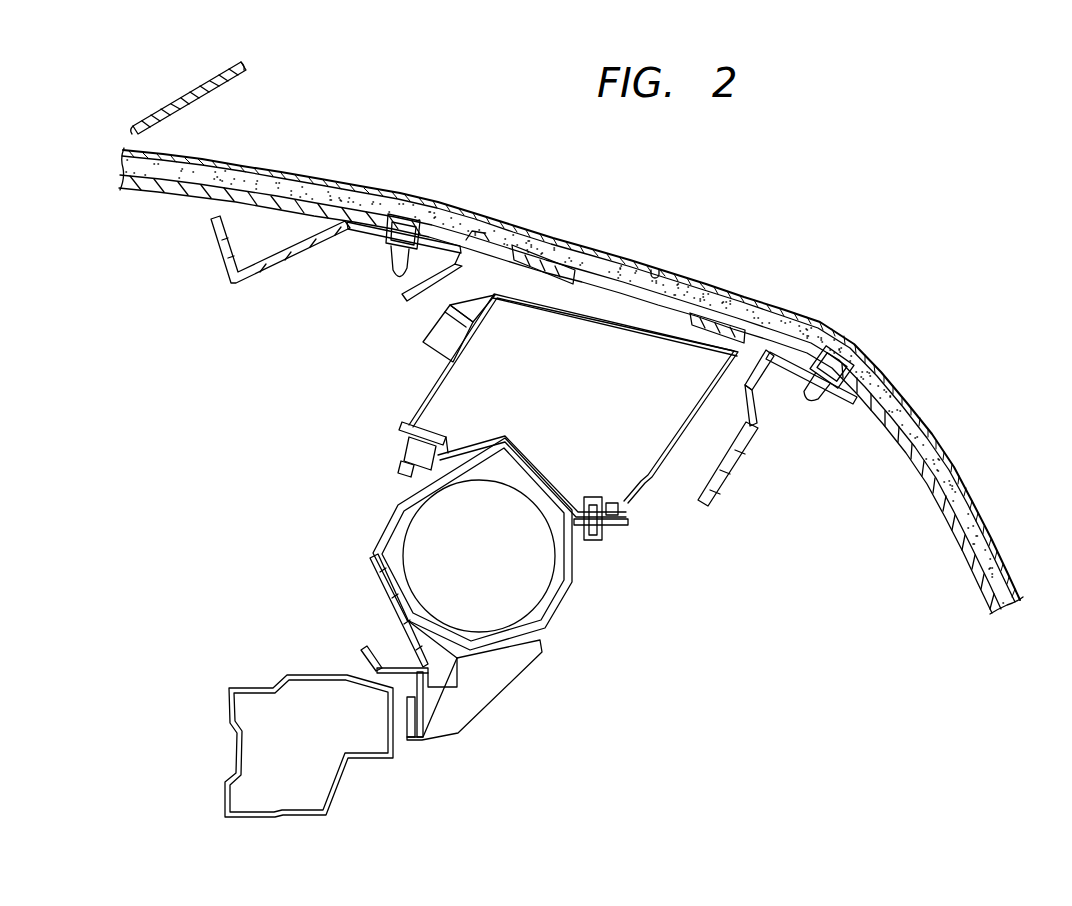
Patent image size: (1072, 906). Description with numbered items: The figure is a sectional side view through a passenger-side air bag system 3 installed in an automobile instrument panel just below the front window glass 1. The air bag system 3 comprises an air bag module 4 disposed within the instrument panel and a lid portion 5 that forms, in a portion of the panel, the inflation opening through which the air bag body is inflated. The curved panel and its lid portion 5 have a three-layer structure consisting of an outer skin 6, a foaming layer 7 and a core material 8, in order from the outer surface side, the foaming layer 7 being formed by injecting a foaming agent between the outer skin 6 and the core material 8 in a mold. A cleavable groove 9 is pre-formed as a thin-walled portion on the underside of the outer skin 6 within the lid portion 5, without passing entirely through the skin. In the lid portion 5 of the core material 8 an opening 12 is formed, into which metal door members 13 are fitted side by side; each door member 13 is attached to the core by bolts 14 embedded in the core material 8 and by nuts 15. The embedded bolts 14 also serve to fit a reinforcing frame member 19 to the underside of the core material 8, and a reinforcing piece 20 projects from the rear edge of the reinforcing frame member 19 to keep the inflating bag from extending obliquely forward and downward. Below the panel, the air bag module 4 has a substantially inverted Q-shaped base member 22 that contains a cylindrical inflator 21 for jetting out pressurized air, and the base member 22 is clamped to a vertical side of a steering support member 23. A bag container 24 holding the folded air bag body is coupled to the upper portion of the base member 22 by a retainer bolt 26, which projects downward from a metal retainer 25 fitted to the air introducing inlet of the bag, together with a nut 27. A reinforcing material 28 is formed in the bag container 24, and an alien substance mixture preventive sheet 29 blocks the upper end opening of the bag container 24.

The front window glass 1 is at (148, 115).
The air bag system 3 is at (506, 186).
The air bag module 4 is at (335, 380).
The lid portion 5 is at (566, 230).
The outer skin 6 is at (305, 176).
The foaming layer 7 is at (272, 183).
The core material 8 is at (234, 194).
The cleavable groove 9 is at (657, 268).
The opening 12 is at (471, 232).
The door member 13 is at (606, 262).
The bolt 14 is at (847, 348).
The nut 15 is at (390, 278).
The reinforcing frame member 19 is at (357, 238).
The reinforcing piece 20 is at (717, 487).
The inflator 21 is at (560, 613).
The base member 22 is at (573, 582).
The steering support member 23 is at (229, 693).
The bag container 24 is at (430, 387).
The retainer 25 is at (472, 443).
The retainer bolt 26 is at (408, 462).
The nut 27 is at (402, 442).
The reinforcing material 28 is at (427, 332).
The alien substance mixture preventive sheet 29 is at (480, 292).